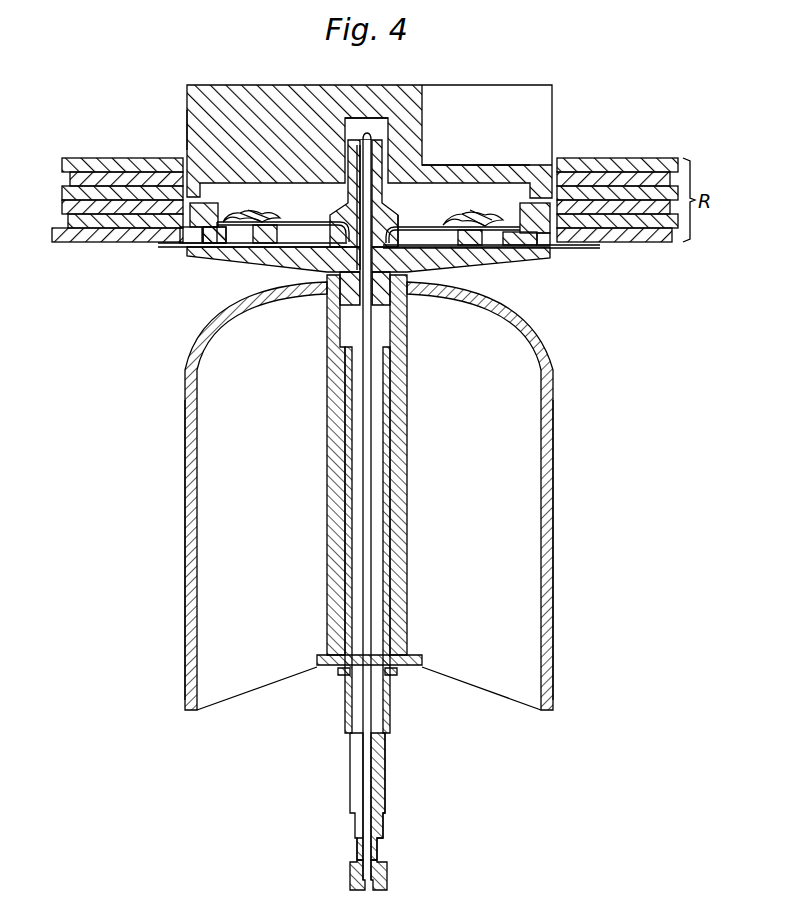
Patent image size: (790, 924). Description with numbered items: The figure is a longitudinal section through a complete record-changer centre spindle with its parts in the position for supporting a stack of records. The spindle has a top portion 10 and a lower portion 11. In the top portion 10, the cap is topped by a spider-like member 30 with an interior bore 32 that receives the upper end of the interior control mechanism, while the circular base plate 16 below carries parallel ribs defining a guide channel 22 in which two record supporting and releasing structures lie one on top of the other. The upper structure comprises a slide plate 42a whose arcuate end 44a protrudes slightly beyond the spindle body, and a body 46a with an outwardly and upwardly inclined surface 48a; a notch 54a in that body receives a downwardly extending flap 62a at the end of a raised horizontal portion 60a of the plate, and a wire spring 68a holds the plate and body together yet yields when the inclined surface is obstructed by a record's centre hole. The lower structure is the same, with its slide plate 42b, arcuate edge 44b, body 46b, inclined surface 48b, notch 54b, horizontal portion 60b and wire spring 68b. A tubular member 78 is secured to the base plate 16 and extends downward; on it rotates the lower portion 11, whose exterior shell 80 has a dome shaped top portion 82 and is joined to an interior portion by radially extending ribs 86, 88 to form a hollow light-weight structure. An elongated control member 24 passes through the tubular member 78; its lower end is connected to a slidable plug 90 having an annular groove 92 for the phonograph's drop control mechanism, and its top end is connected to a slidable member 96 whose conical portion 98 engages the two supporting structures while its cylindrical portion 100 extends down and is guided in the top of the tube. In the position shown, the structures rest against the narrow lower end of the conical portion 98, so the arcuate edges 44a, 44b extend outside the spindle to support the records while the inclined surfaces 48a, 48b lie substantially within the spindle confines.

The top portion 10 is at (187, 126).
The lower portion 11 is at (182, 515).
The circular base plate 16 is at (493, 262).
The guide channel 22 is at (482, 186).
The interior control member 24 is at (372, 400).
The spider-like member 30 is at (236, 85).
The interior bore 32 is at (378, 121).
The slide plate 42a is at (572, 250).
The slide plate 42b is at (178, 250).
The arcuate end 44a is at (598, 250).
The arcuate edge 44b is at (155, 250).
The body 46a is at (209, 215).
The body 46b is at (522, 210).
The inclined surface 48a is at (132, 242).
The inclined surface 48b is at (588, 158).
The notch 54a is at (250, 255).
The notch 54b is at (505, 258).
The horizontal portion 60a is at (325, 228).
The horizontal portion 60b is at (450, 232).
The downwardly extending flap 62a is at (270, 242).
The wire spring 68a is at (262, 214).
The wire spring 68b is at (490, 216).
The tubular member 78 is at (387, 437).
The exterior shell 80 is at (555, 510).
The dome shaped top portion 82 is at (512, 308).
The radially extending rib 86 is at (475, 682).
The radially extending rib 88 is at (262, 680).
The slidable plug 90 is at (383, 826).
The annular groove 92 is at (383, 852).
The slidable member 96 is at (384, 157).
The conical portion 98 is at (398, 222).
The cylindrical portion 100 is at (406, 322).